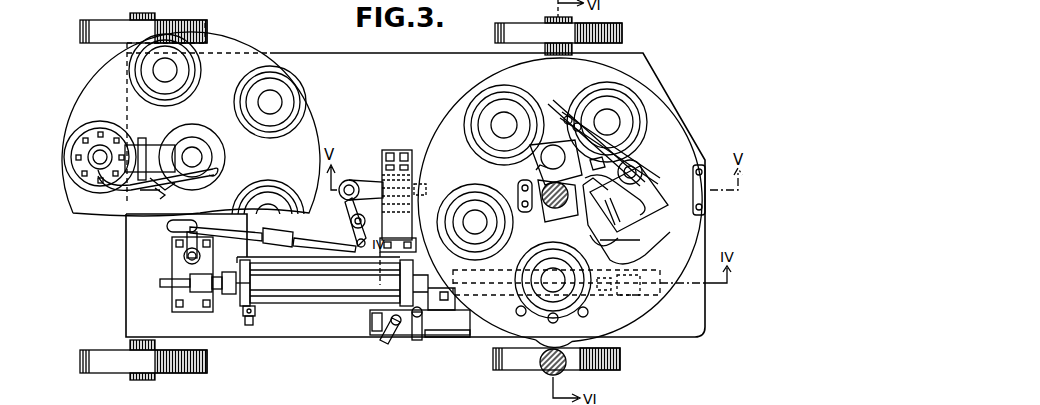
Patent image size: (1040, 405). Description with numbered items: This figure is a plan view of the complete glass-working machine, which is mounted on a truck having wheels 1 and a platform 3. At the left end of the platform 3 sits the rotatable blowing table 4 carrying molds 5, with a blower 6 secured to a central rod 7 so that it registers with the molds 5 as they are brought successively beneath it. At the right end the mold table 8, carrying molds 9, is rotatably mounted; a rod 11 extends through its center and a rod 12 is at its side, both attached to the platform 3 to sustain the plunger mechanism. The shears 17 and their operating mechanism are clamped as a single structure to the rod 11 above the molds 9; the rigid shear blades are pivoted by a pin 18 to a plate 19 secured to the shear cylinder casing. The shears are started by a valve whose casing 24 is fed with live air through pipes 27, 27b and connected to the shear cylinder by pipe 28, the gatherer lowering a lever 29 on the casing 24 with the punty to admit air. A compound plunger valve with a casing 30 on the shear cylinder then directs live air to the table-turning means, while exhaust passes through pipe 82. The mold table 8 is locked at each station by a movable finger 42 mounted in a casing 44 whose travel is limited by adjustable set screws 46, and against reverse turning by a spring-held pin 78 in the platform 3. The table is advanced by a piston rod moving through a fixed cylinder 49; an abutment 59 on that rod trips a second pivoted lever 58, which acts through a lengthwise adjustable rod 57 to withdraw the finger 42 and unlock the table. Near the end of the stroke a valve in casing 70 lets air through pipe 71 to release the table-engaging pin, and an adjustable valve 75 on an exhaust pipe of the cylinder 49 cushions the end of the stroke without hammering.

The wheels 1 is at (107, 27).
The platform 3 is at (703, 308).
The rotatable blowing table 4 is at (309, 128).
The molds 5 is at (286, 97).
The blower 6 is at (104, 140).
The central rod 7 is at (196, 150).
The mold table 8 is at (628, 83).
The molds 9 is at (480, 113).
The rod 11 is at (556, 209).
The rod 12 is at (549, 373).
The shears 17 is at (640, 197).
The pin 18 is at (629, 199).
The plate 19 is at (648, 178).
The valve casing 24 is at (640, 165).
The pipe 27 is at (575, 100).
The pipe 27b is at (384, 346).
The pipe 28 is at (602, 139).
The lever 29 is at (668, 223).
The casing 30 is at (536, 168).
The movable finger 42 is at (426, 184).
The finger casing 44 is at (359, 183).
The adjustable set screws 46 is at (403, 152).
The cylinder 49 is at (331, 290).
The lengthwise adjustable rod 57 is at (321, 240).
The second pivoted lever 58 is at (186, 251).
The abutment 59 is at (206, 292).
The casing 70 is at (401, 338).
The pipe 71 is at (446, 340).
The adjustable valve 75 is at (252, 318).
The pin 78 is at (706, 200).
The pipe 82 is at (592, 157).